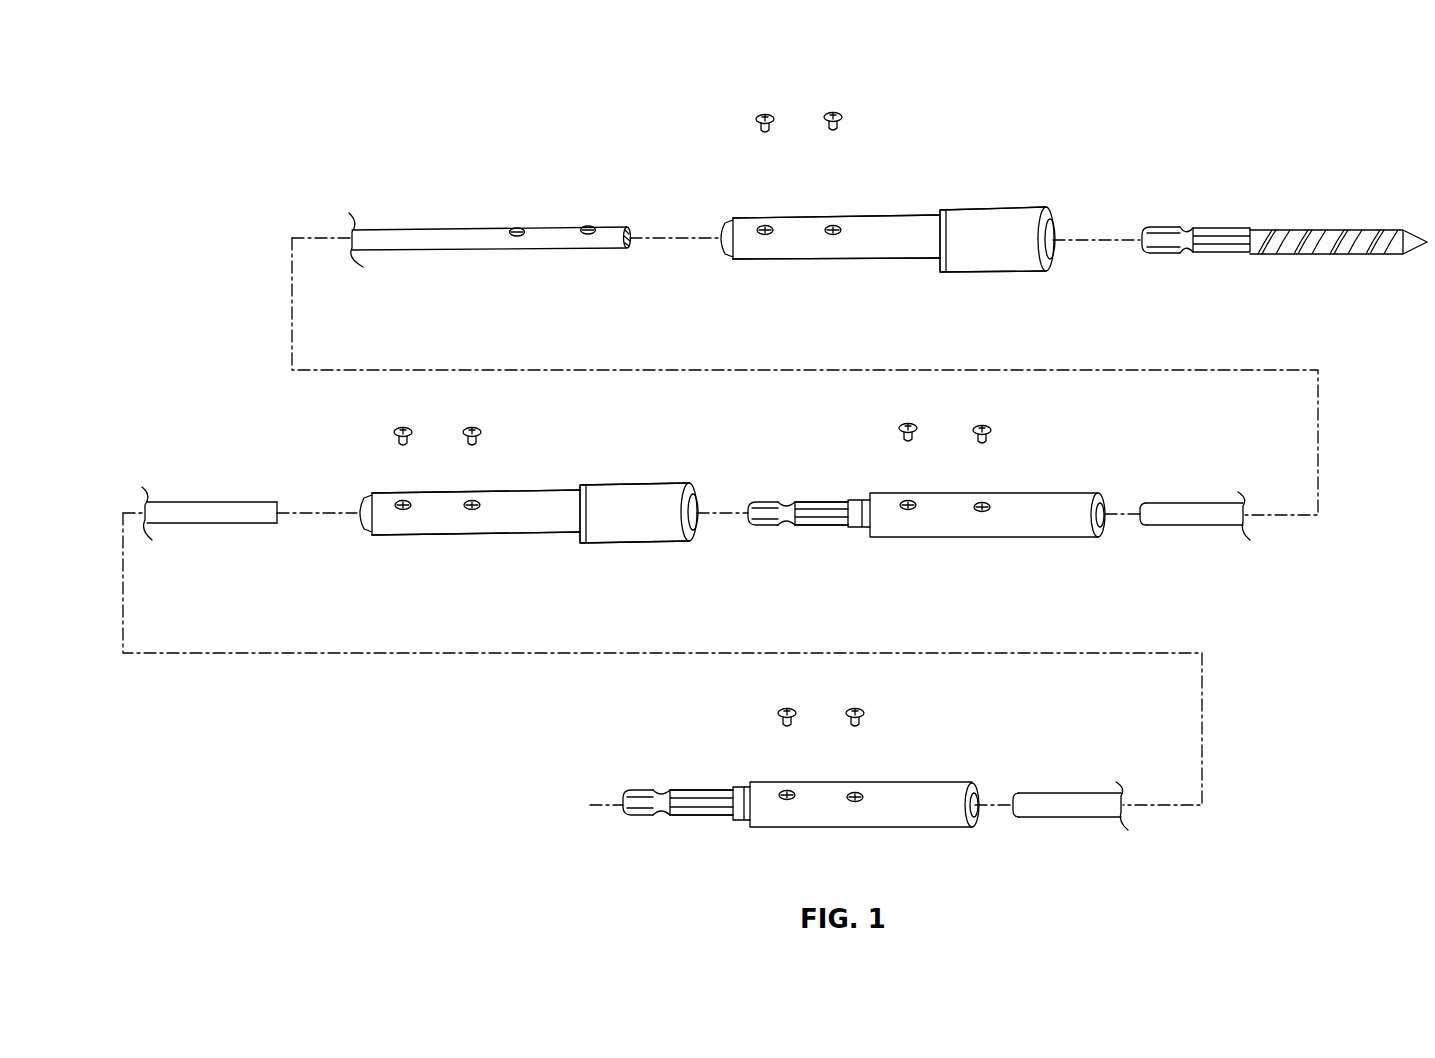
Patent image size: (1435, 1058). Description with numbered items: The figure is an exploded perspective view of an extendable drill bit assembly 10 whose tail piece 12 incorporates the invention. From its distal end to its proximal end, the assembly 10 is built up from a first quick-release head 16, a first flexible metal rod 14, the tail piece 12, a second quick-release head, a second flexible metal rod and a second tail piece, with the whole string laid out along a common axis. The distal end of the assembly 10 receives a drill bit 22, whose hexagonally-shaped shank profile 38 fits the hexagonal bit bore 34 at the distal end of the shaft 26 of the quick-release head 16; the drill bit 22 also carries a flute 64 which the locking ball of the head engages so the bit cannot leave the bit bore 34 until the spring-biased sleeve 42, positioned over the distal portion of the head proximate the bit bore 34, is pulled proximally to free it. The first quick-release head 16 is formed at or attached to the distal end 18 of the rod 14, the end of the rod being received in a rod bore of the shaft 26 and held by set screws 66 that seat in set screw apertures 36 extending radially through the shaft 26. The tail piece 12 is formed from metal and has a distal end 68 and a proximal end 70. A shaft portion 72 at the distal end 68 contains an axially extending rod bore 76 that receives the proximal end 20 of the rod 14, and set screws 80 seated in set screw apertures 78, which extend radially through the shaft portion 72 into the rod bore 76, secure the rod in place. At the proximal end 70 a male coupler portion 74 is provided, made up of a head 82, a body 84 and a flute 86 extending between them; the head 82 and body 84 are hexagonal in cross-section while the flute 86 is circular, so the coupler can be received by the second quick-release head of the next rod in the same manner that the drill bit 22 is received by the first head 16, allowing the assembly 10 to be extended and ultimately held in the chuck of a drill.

The extendable drill bit assembly 10 is at (1352, 442).
The tail piece 12 is at (864, 645).
The first flexible metal rod 14 is at (436, 228).
The first quick-release head 16 is at (922, 210).
The distal end of the rod 18 is at (631, 233).
The proximal end of the rod 20 is at (1136, 508).
The drill bit 22 is at (1284, 210).
The shaft 26 is at (870, 217).
The bit bore 34 is at (1060, 238).
The set screw apertures 36 is at (765, 236).
The hexagonally-shaped shank profile 38 is at (1210, 228).
The sleeve 42 is at (1000, 210).
The flute 64 is at (1185, 231).
The set screws 66 is at (764, 112).
The distal end of the tail piece 68 is at (1102, 530).
The proximal end of the tail piece 70 is at (729, 671).
The shaft portion 72 is at (1035, 493).
The male coupler portion 74 is at (820, 498).
The rod bore 76 is at (1105, 505).
The set screw apertures 78 is at (908, 460).
The set screws 80 is at (786, 705).
The head 82 is at (765, 528).
The body 84 is at (828, 526).
The flute 86 is at (790, 526).